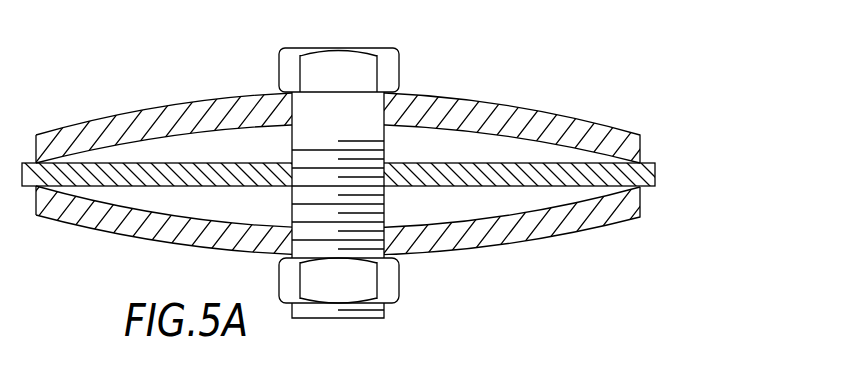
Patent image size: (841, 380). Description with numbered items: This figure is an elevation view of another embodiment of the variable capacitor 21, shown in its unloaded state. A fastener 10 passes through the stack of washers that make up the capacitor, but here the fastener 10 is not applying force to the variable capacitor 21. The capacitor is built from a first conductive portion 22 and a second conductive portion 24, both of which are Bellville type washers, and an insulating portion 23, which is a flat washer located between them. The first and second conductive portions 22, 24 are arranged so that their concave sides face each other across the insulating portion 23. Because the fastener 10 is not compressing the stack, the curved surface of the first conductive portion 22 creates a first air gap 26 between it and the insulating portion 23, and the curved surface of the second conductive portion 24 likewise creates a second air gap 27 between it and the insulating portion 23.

The fastener 10 is at (255, 62).
The variable capacitor 21 is at (420, 150).
The first conductive portion 22 is at (420, 150).
The insulating portion 23 is at (656, 178).
The second conductive portion 24 is at (420, 150).
The first air gap 26 is at (456, 142).
The second air gap 27 is at (478, 224).